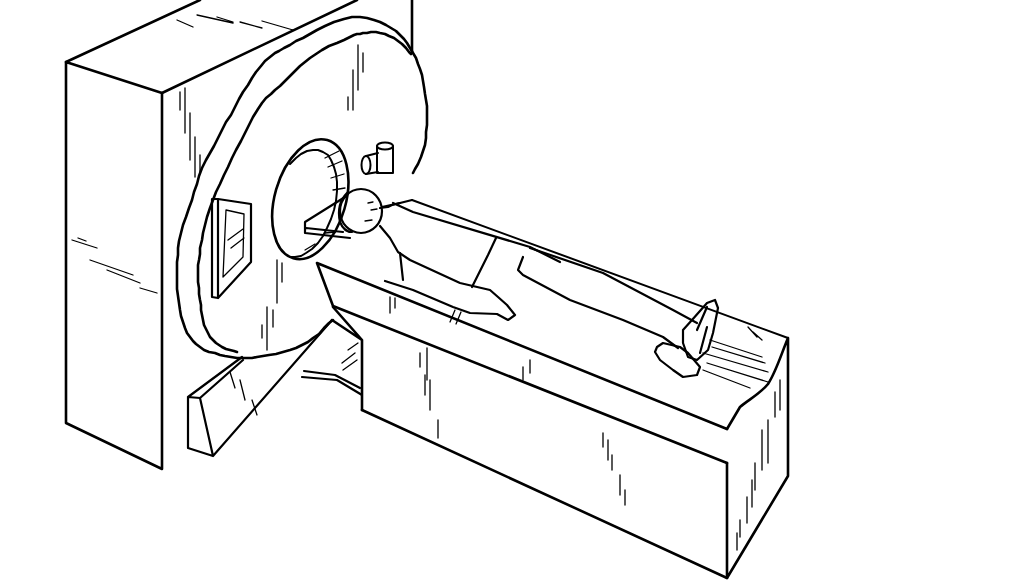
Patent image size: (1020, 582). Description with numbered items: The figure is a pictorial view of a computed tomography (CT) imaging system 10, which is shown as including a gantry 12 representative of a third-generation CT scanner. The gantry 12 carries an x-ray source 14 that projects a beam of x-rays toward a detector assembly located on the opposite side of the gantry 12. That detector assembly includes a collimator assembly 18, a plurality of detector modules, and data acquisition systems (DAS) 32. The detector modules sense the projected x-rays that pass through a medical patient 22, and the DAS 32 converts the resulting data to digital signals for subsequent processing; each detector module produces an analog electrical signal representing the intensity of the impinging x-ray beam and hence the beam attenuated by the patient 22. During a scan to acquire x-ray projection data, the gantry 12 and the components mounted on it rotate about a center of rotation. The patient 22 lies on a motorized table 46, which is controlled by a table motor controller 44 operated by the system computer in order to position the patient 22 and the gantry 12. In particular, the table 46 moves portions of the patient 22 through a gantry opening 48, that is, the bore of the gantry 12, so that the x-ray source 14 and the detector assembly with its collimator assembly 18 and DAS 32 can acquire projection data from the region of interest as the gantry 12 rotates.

The computed tomography (CT) imaging system 10 is at (524, 84).
The gantry 12 is at (403, 110).
The x-ray source 14 is at (397, 155).
The collimator assembly 18 is at (246, 280).
The medical patient 22 is at (451, 230).
The data acquisition systems (DAS) 32 is at (246, 198).
The table motor controller 44 is at (544, 478).
The motorized table 46 is at (538, 473).
The gantry opening 48 is at (301, 177).